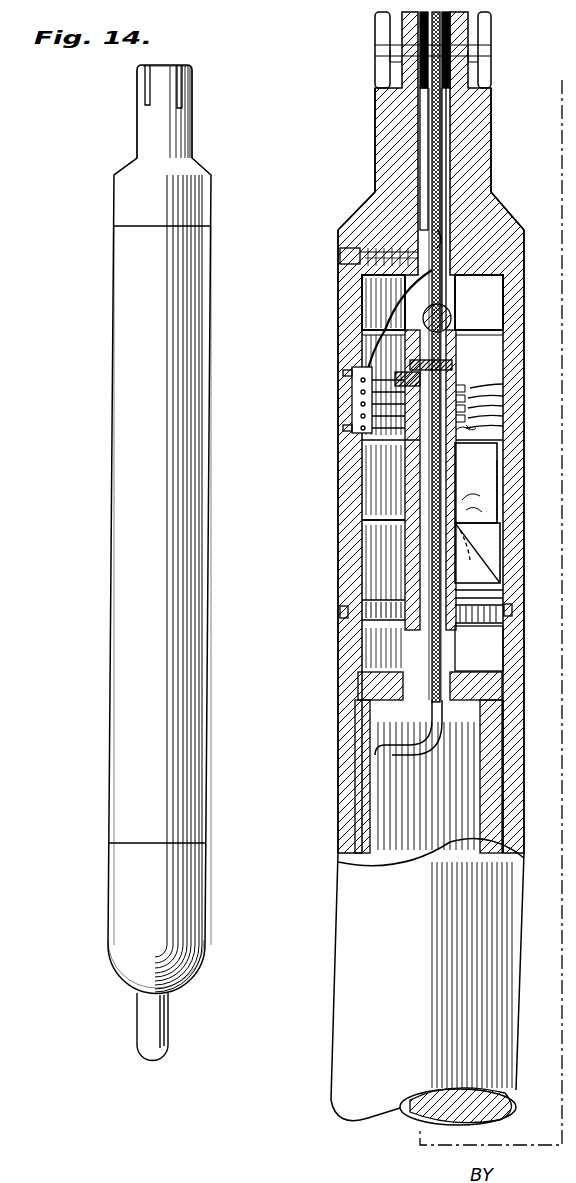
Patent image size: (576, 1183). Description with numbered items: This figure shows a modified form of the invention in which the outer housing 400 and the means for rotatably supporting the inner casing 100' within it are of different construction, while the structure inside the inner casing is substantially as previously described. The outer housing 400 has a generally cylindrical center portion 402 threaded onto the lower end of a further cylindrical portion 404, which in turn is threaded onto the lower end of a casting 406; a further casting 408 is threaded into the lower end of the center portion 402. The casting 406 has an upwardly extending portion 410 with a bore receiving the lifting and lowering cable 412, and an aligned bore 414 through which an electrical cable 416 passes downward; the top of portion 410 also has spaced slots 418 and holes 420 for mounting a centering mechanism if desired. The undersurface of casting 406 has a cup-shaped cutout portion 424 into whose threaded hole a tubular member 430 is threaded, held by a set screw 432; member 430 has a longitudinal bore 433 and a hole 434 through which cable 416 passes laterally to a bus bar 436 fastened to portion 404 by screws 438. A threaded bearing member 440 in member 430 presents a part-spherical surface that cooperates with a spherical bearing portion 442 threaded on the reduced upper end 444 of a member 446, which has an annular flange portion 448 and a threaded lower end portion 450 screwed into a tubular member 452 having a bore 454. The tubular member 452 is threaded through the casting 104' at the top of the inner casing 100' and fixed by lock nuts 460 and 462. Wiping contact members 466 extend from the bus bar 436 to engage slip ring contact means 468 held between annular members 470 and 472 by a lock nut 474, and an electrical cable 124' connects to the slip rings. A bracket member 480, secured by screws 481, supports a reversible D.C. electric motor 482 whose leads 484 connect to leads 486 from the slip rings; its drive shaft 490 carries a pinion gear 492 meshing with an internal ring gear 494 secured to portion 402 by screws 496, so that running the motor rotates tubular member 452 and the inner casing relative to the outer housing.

The outer housing 400 is at (99, 460).
The center portion 402 is at (198, 588).
The cylindrical portion 404 is at (203, 276).
The casting 406 is at (205, 192).
The casting 408 is at (195, 897).
The upwardly extending portion 410 is at (148, 127).
The lifting and lowering cable 412 is at (452, 88).
The bore 414 is at (440, 137).
The electrical cable 416 is at (440, 165).
The slots 418 is at (150, 68).
The holes 420 is at (382, 60).
The cup-shaped cutout portion 424 is at (498, 284).
The tubular member 430 is at (479, 302).
The set screw 432 is at (345, 252).
The bore 433 is at (479, 317).
The hole 434 is at (383, 302).
The bus bar 436 is at (350, 396).
The screws 438 is at (352, 372).
The bearing member 440 is at (505, 342).
The spherical bearing portion 442 is at (450, 350).
The reduced upper end 444 is at (362, 358).
The member 446 is at (505, 386).
The annular flange portion 448 is at (476, 483).
The lower end portion 450 is at (382, 480).
The tubular member 452 is at (415, 555).
The bore 454 is at (420, 530).
The lock nut 460 is at (464, 702).
The lock nut 462 is at (380, 648).
The wiping contact members 466 is at (410, 464).
The slip ring contact means 468 is at (505, 408).
The annular member 470 is at (454, 438).
The annular member 472 is at (455, 377).
The lock nut 474 is at (448, 364).
The bracket member 480 is at (500, 586).
The screws 481 is at (475, 558).
The reversible D.C. electric motor 482 is at (498, 547).
The leads 484 is at (500, 492).
The electrical leads 486 is at (503, 430).
The drive shaft 490 is at (505, 612).
The pinion gear 492 is at (479, 648).
The internal ring gear 494 is at (382, 595).
The screws 496 is at (340, 614).
The inner casing 100' is at (530, 776).
The casting 104' is at (477, 751).
The electrical cable 124' is at (426, 786).